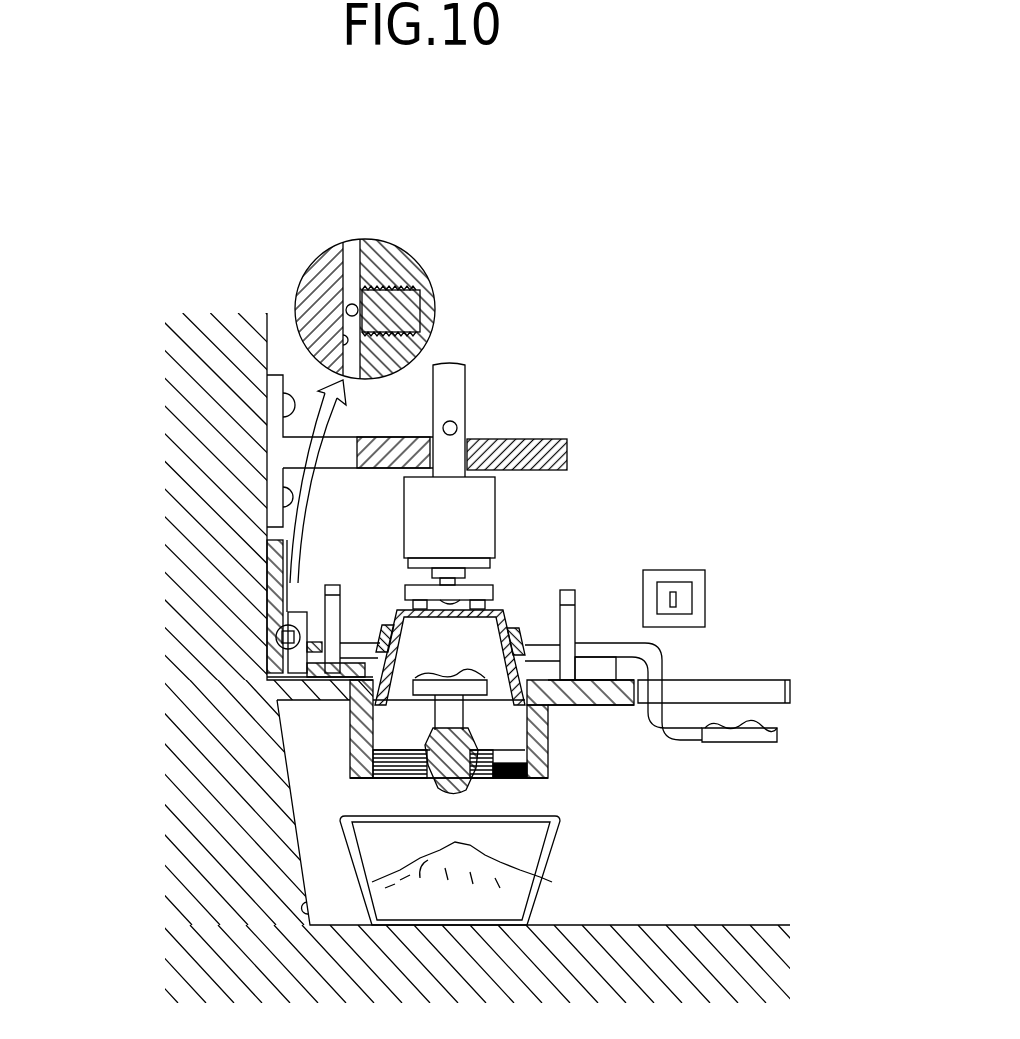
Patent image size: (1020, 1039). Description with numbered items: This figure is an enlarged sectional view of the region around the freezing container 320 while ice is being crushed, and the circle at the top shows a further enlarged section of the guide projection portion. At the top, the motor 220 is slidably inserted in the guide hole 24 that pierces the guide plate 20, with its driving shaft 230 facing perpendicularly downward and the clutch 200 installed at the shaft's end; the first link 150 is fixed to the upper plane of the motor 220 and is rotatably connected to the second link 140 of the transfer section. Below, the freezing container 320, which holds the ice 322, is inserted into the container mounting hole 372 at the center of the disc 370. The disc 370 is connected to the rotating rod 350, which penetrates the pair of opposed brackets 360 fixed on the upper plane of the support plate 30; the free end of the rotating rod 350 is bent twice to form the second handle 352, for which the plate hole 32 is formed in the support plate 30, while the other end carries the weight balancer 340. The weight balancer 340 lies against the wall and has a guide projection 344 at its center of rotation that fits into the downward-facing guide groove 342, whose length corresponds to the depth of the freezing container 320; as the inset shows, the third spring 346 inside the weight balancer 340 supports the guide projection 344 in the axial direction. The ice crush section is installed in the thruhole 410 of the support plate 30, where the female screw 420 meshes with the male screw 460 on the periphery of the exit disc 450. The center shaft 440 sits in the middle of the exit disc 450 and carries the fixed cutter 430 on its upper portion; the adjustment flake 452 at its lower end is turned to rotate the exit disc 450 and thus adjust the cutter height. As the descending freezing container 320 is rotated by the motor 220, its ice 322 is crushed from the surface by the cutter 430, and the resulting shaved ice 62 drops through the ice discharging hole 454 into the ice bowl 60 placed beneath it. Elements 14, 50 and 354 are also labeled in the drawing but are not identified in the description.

The wall and floor 14 is at (305, 916).
The guide plate 20 is at (567, 457).
The guide hole 24 is at (468, 440).
The support plate 30 is at (630, 695).
The plate hole 32 is at (790, 690).
The sensor 50 is at (678, 598).
The ice bowl 60 is at (535, 905).
The shaved ice 62 is at (518, 877).
The second link 140 is at (460, 372).
The first link 150 is at (472, 457).
The clutch 200 is at (497, 580).
The motor 220 is at (487, 483).
The driving shaft 230 is at (460, 580).
The freezing container 320 is at (510, 615).
The ice 322 is at (390, 685).
The weight balancer 340 is at (270, 652).
The guide groove 342 is at (290, 600).
The guide projection 344 is at (350, 310).
The third spring 346 is at (427, 312).
The rotating rod 350 is at (547, 652).
The second handle 352 is at (777, 732).
The nut 354 is at (305, 640).
The brackets 360 is at (530, 660).
The disc 370 is at (372, 678).
The container mounting hole 372 is at (382, 636).
The thruhole 410 is at (540, 720).
The female screw 420 is at (550, 752).
The cutter 430 is at (527, 633).
The center shaft 440 is at (545, 785).
The exit disc 450 is at (420, 748).
The adjustment flake 452 is at (466, 785).
The ice discharging hole 454 is at (303, 880).
The male screw 460 is at (527, 770).